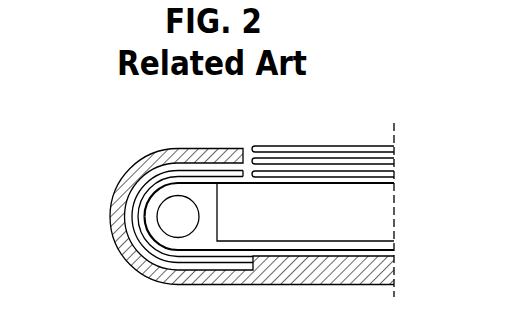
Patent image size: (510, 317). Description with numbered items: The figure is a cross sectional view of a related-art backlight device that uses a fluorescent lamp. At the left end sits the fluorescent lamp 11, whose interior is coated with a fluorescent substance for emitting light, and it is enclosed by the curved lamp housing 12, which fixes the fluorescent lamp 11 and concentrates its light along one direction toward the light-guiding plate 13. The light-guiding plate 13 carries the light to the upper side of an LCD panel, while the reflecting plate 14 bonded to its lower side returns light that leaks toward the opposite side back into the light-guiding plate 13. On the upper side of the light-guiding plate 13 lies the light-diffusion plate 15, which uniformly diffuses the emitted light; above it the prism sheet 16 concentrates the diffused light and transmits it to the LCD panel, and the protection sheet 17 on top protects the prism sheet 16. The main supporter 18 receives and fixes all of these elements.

The fluorescent lamp 11 is at (172, 205).
The lamp housing 12 is at (138, 216).
The light-guiding plate 13 is at (395, 216).
The reflecting plate 14 is at (395, 249).
The light-diffusion plate 15 is at (395, 181).
The prism sheet 16 is at (345, 145).
The protection sheet 17 is at (317, 150).
The main supporter 18 is at (395, 272).